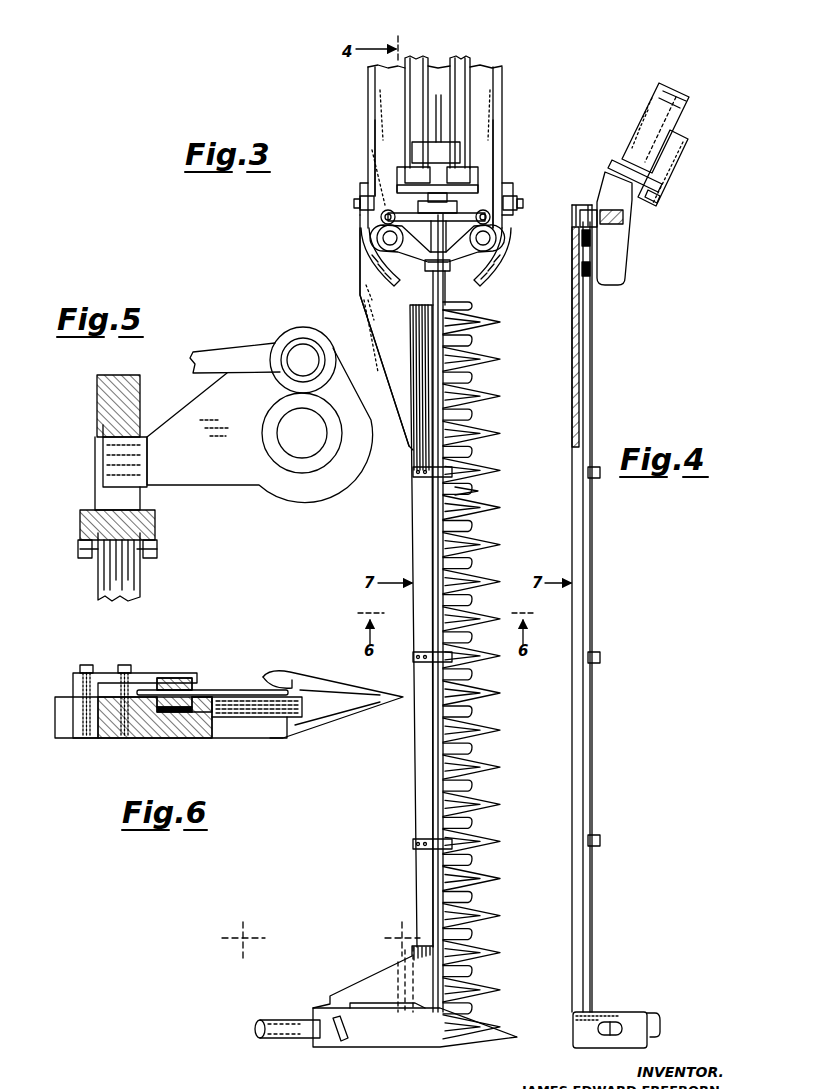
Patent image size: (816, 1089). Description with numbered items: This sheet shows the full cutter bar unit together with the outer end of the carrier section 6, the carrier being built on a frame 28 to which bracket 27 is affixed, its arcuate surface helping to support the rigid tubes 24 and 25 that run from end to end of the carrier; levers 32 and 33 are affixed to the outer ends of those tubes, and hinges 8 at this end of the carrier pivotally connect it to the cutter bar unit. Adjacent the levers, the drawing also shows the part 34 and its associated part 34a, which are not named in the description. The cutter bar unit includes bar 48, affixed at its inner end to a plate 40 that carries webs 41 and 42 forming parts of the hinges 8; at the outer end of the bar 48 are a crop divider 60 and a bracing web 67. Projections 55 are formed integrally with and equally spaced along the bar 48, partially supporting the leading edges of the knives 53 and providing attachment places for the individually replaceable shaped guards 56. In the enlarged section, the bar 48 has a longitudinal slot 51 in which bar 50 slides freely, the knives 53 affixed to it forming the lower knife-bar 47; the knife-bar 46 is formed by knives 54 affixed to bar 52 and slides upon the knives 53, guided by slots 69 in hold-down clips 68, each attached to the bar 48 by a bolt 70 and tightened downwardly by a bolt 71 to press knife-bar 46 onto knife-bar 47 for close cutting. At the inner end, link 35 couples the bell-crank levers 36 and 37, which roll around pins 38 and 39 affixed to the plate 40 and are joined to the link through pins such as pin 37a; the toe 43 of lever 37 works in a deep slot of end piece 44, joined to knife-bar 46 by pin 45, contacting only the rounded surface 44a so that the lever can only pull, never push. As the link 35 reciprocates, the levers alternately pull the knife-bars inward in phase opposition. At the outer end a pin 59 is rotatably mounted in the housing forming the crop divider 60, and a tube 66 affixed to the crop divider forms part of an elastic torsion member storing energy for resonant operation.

In FIG. 3, the carrier section 6 is at (366, 81).
In FIG. 4, the carrier section 6 is at (638, 112).
In FIG. 3, the hinges 8 is at (353, 203).
In FIG. 3, the rigid tube 24 is at (421, 67).
In FIG. 4, the rigid tube 24 is at (680, 127).
In FIG. 3, the rigid tube 25 is at (464, 69).
In FIG. 3, the bracket 27 is at (441, 147).
In FIG. 3, the frame 28 is at (380, 112).
In FIG. 4, the frame 28 is at (677, 88).
In FIG. 3, the lever 32 is at (404, 176).
In FIG. 4, the lever 32 is at (658, 196).
In FIG. 3, the lever 33 is at (467, 182).
In FIG. 3, the cross bar 34 is at (455, 191).
In FIG. 4, the cross bar 34 is at (607, 193).
In FIG. 3, the shaft 34a is at (452, 206).
In FIG. 4, the shaft 34a is at (600, 204).
In FIG. 3, the link 35 is at (472, 215).
In FIG. 5, the link 35 is at (205, 357).
In FIG. 3, the bell-crank lever 36 is at (400, 254).
In FIG. 3, the bell-crank lever 37 is at (495, 248).
In FIG. 5, the bell-crank lever 37 is at (260, 417).
In FIG. 5, the pin 37a is at (300, 358).
In FIG. 3, the pin 38 is at (377, 236).
In FIG. 3, the pin 39 is at (496, 236).
In FIG. 5, the pin 39 is at (291, 452).
In FIG. 3, the plate 40 is at (358, 300).
In FIG. 4, the plate 40 is at (571, 349).
In FIG. 3, the web 41 is at (368, 249).
In FIG. 3, the web 42 is at (502, 264).
In FIG. 4, the web 42 is at (620, 250).
In FIG. 5, the toe 43 is at (109, 454).
In FIG. 3, the end piece 44 is at (463, 264).
In FIG. 5, the end piece 44 is at (97, 382).
In FIG. 5, the rounded surface 44a is at (104, 428).
In FIG. 3, the pin 45 is at (450, 272).
In FIG. 5, the pin 45 is at (152, 552).
In FIG. 3, the knife-bar 46 is at (440, 447).
In FIG. 4, the knife-bar 46 is at (588, 611).
In FIG. 5, the knife-bar 46 is at (102, 590).
In FIG. 6, the knife-bar 46 is at (220, 690).
In FIG. 6, the knife-bar 47 is at (208, 705).
In FIG. 3, the bar 48 is at (416, 552).
In FIG. 4, the bar 48 is at (573, 470).
In FIG. 6, the bar 48 is at (92, 736).
In FIG. 6, the bar 50 is at (162, 710).
In FIG. 6, the slot 51 is at (172, 712).
In FIG. 3, the bar 52 is at (460, 452).
In FIG. 6, the bar 52 is at (165, 679).
In FIG. 3, the knives 53 is at (462, 470).
In FIG. 3, the knives 54 is at (478, 491).
In FIG. 6, the projections 55 is at (268, 716).
In FIG. 3, the shaped guards 56 is at (488, 543).
In FIG. 6, the shaped guards 56 is at (293, 680).
In FIG. 3, the pin 59 is at (344, 1046).
In FIG. 3, the crop divider 60 is at (414, 1040).
In FIG. 4, the crop divider 60 is at (617, 1012).
In FIG. 3, the tube 66 is at (268, 1020).
In FIG. 3, the bracing web 67 is at (360, 990).
In FIG. 3, the hold-down clip 68 is at (414, 474).
In FIG. 4, the hold-down clip 68 is at (598, 478).
In FIG. 6, the hold-down clip 68 is at (75, 680).
In FIG. 6, the slot 69 is at (177, 678).
In FIG. 6, the bolt 70 is at (84, 665).
In FIG. 6, the bolt 71 is at (122, 665).